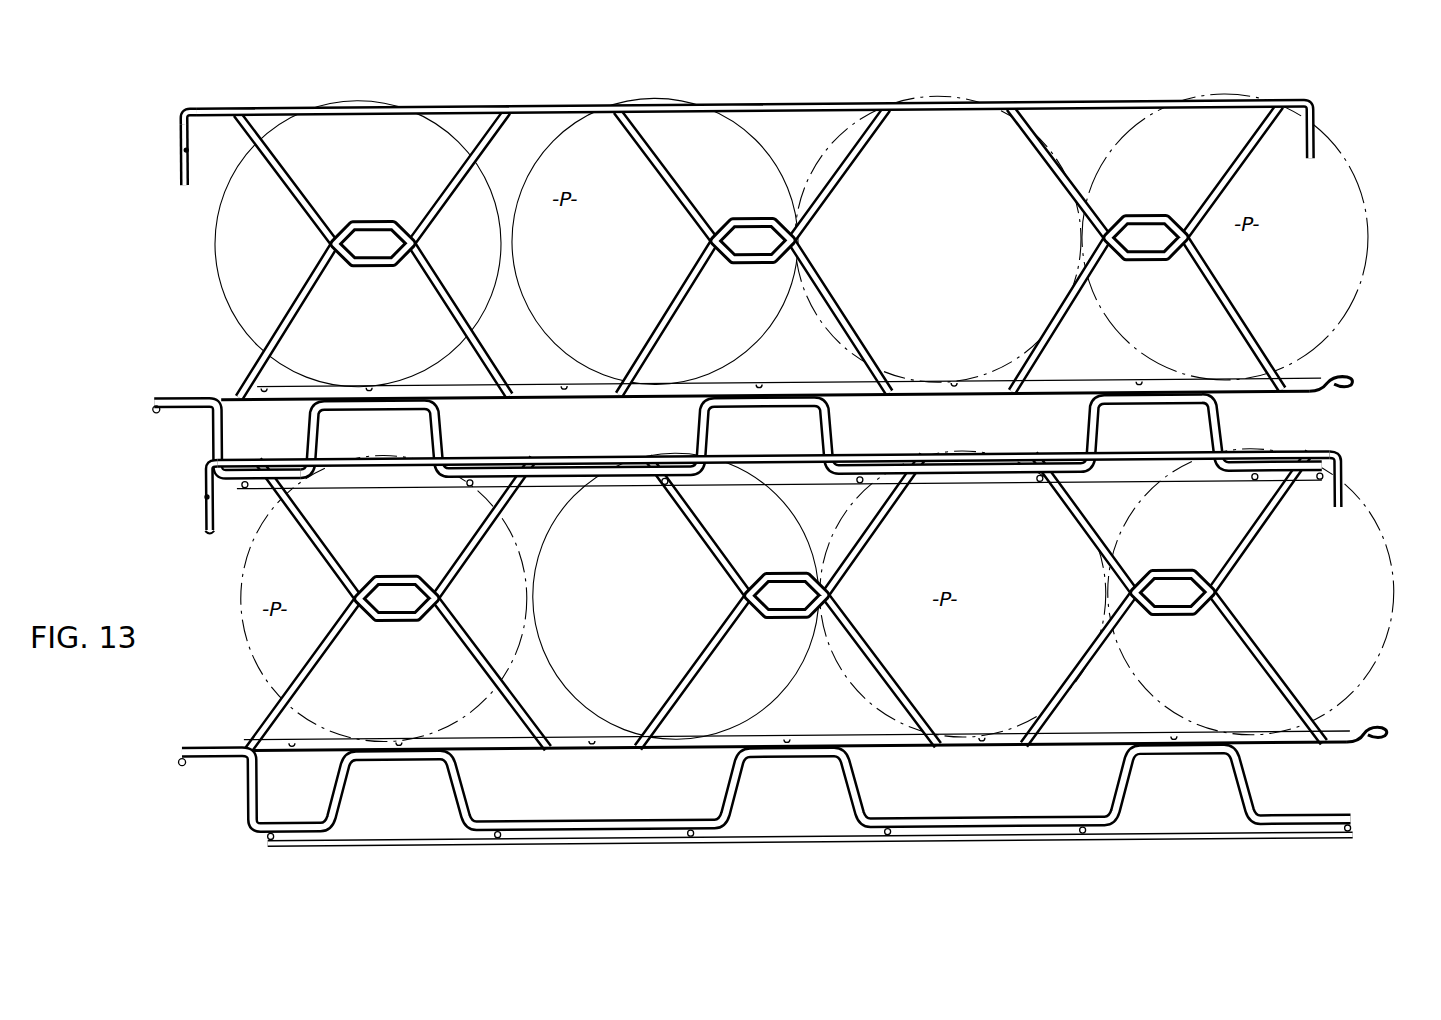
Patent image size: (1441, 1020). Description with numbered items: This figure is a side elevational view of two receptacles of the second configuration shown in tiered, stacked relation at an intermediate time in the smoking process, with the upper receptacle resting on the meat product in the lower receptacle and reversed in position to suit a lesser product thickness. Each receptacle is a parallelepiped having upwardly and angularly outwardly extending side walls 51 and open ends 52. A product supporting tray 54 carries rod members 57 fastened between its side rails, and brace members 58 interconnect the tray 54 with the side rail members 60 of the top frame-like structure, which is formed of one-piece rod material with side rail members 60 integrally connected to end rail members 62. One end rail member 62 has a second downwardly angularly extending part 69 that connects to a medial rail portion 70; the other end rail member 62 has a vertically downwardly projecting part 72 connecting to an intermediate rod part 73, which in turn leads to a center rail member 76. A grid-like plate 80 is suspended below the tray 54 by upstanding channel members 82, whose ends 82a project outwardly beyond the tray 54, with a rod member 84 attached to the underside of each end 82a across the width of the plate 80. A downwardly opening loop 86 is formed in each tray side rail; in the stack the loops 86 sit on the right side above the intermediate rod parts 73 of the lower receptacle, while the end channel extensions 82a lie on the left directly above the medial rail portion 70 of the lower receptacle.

The side walls 51 is at (691, 212).
The open ends 52 is at (188, 273).
The product supporting tray 54 is at (850, 375).
The rod members 57 is at (962, 744).
The brace members 58 is at (301, 186).
The side rail members 60 is at (330, 104).
The end rail members 62 is at (1350, 452).
The second downwardly angularly extending part 69 is at (200, 497).
The medial rail portion 70 is at (205, 535).
The vertically downwardly projecting part 72 is at (188, 107).
The intermediate rod part 73 is at (182, 150).
The center rail member 76 is at (183, 182).
The grid-like plate 80 is at (351, 844).
The channel members 82 is at (310, 431).
The end of channel members 82a is at (199, 396).
The rod member 84 is at (157, 411).
The downwardly opening loop 86 is at (1343, 378).